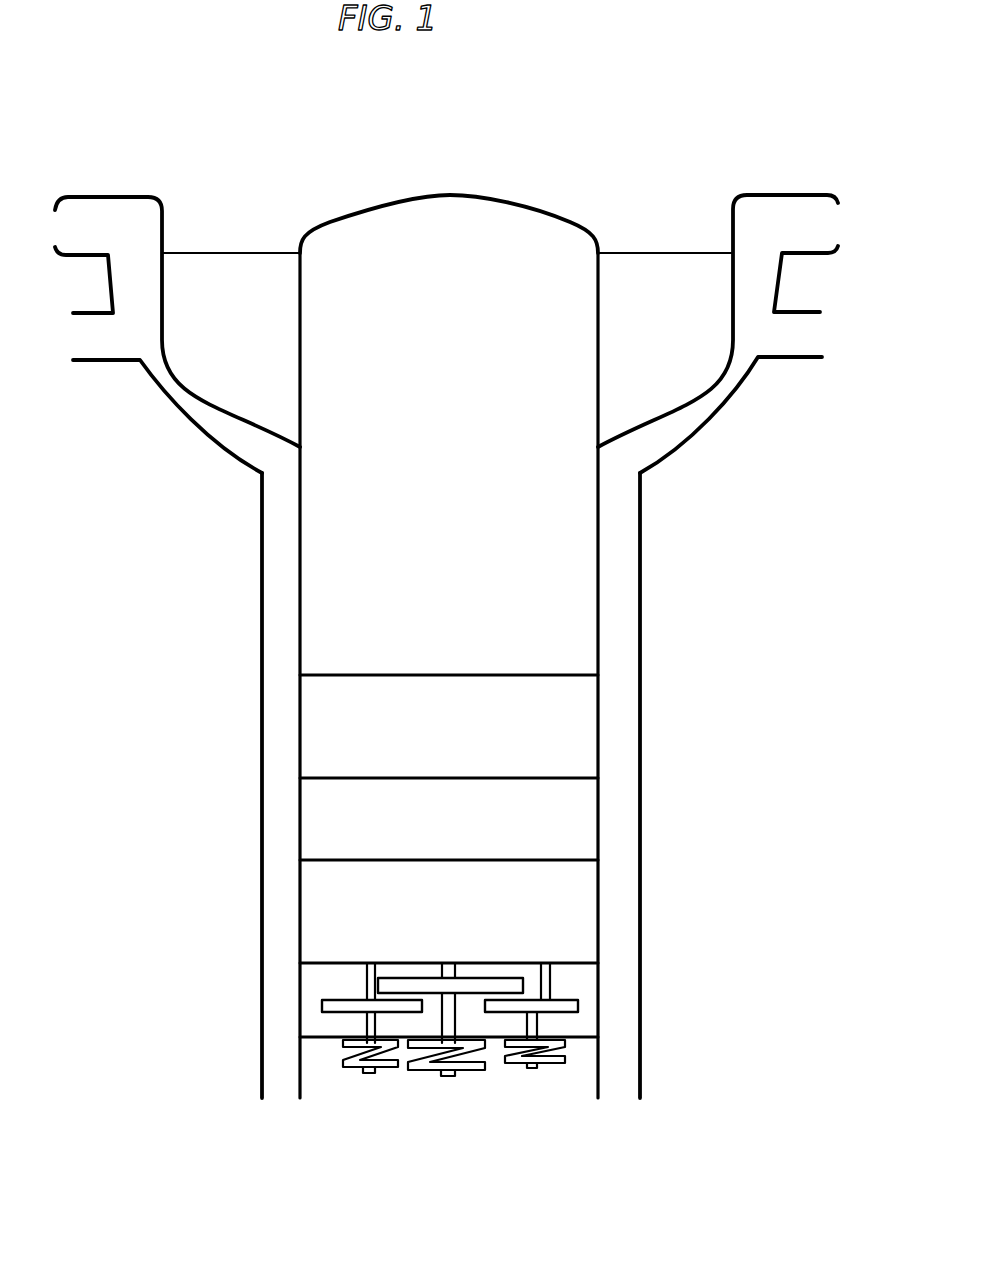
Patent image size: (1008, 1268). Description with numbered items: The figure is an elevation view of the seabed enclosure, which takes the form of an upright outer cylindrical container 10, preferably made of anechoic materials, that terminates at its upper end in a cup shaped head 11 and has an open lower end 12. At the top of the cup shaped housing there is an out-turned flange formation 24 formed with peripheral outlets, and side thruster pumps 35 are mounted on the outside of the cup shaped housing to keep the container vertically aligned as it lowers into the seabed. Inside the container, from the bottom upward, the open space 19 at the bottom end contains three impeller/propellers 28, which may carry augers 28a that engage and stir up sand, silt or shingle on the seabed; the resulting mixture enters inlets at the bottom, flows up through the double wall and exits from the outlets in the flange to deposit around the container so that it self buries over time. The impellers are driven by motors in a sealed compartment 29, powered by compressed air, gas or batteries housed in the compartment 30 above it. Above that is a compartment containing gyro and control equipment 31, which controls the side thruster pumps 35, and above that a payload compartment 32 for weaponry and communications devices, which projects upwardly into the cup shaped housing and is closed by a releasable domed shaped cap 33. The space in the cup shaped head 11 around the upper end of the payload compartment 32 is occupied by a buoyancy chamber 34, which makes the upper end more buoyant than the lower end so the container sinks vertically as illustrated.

The outer cylindrical container 10 is at (258, 745).
The cup shaped head 11 is at (700, 441).
The open lower end 12 is at (380, 1092).
The open space at the bottom end 19 is at (503, 1080).
The out-turned flange formation 24 is at (850, 222).
The impeller/propellers 28 is at (360, 1022).
The augers 28a is at (350, 1060).
The sealed compartment 29 is at (577, 915).
The compressed air/battery compartment 30 is at (587, 818).
The gyro and control equipment compartment 31 is at (590, 722).
The payload compartment 32 is at (572, 560).
The releasable domed shaped cap 33 is at (428, 197).
The buoyancy chamber 34 is at (213, 370).
The side thruster pumps 35 is at (830, 336).